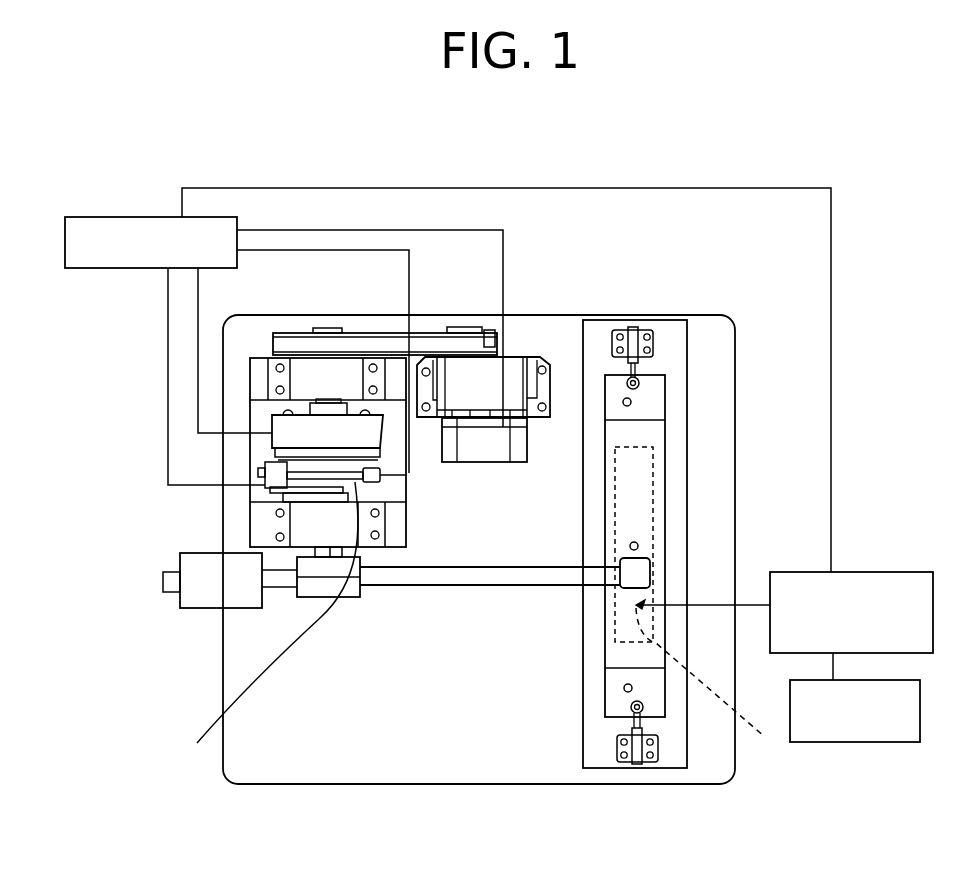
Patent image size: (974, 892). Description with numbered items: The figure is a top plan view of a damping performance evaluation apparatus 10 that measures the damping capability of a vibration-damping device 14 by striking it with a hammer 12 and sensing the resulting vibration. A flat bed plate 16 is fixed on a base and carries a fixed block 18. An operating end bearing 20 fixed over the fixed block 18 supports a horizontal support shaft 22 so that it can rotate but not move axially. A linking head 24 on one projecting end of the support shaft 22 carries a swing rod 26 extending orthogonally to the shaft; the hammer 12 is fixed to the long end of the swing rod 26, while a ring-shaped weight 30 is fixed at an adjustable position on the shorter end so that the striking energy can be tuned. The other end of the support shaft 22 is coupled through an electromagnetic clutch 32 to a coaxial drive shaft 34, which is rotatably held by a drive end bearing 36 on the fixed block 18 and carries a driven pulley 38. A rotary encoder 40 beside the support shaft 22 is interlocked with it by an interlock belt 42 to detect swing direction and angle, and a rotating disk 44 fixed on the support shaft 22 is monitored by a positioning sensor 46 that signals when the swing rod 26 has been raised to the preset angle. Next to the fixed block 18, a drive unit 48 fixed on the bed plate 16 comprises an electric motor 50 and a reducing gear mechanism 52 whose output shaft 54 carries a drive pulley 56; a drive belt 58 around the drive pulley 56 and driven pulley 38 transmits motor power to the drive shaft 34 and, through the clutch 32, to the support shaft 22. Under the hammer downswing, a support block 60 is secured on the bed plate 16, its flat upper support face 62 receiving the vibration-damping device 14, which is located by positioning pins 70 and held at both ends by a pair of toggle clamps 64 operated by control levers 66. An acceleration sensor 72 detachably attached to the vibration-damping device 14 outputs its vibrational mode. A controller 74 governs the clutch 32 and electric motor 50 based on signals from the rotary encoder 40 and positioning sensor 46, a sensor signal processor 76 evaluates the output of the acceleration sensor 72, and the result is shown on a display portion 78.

The damping performance evaluation apparatus 10 is at (733, 306).
The hammer 12 is at (636, 568).
The vibration-damping device 14 is at (665, 428).
The bed plate 16 is at (720, 350).
The fixed block 18 is at (260, 443).
The operating end bearing 20 is at (305, 526).
The support shaft 22 is at (327, 511).
The linking head 24 is at (321, 589).
The swing rod 26 is at (264, 625).
The weight 30 is at (196, 598).
The clutch 32 is at (287, 428).
The drive shaft 34 is at (330, 402).
The drive end bearing 36 is at (305, 372).
The driven pulley 38 is at (349, 346).
The rotary encoder 40 is at (265, 468).
The interlock belt 42 is at (268, 495).
The rotating disk 44 is at (398, 578).
The positioning sensor 46 is at (372, 468).
The drive unit 48 is at (498, 335).
The electric motor 50 is at (487, 445).
The reducing gear mechanism 52 is at (487, 375).
The output shaft 54 is at (468, 328).
The drive pulley 56 is at (498, 323).
The drive belt 58 is at (397, 344).
The support block 60 is at (672, 319).
The support face 62 is at (675, 467).
The clamps 64 is at (621, 303).
The control lever 66 is at (633, 331).
The positioning pins 70 is at (630, 400).
The acceleration sensor 72 is at (713, 683).
The controller 74 is at (158, 220).
The sensor signal processor 76 is at (912, 577).
The display portion 78 is at (838, 742).